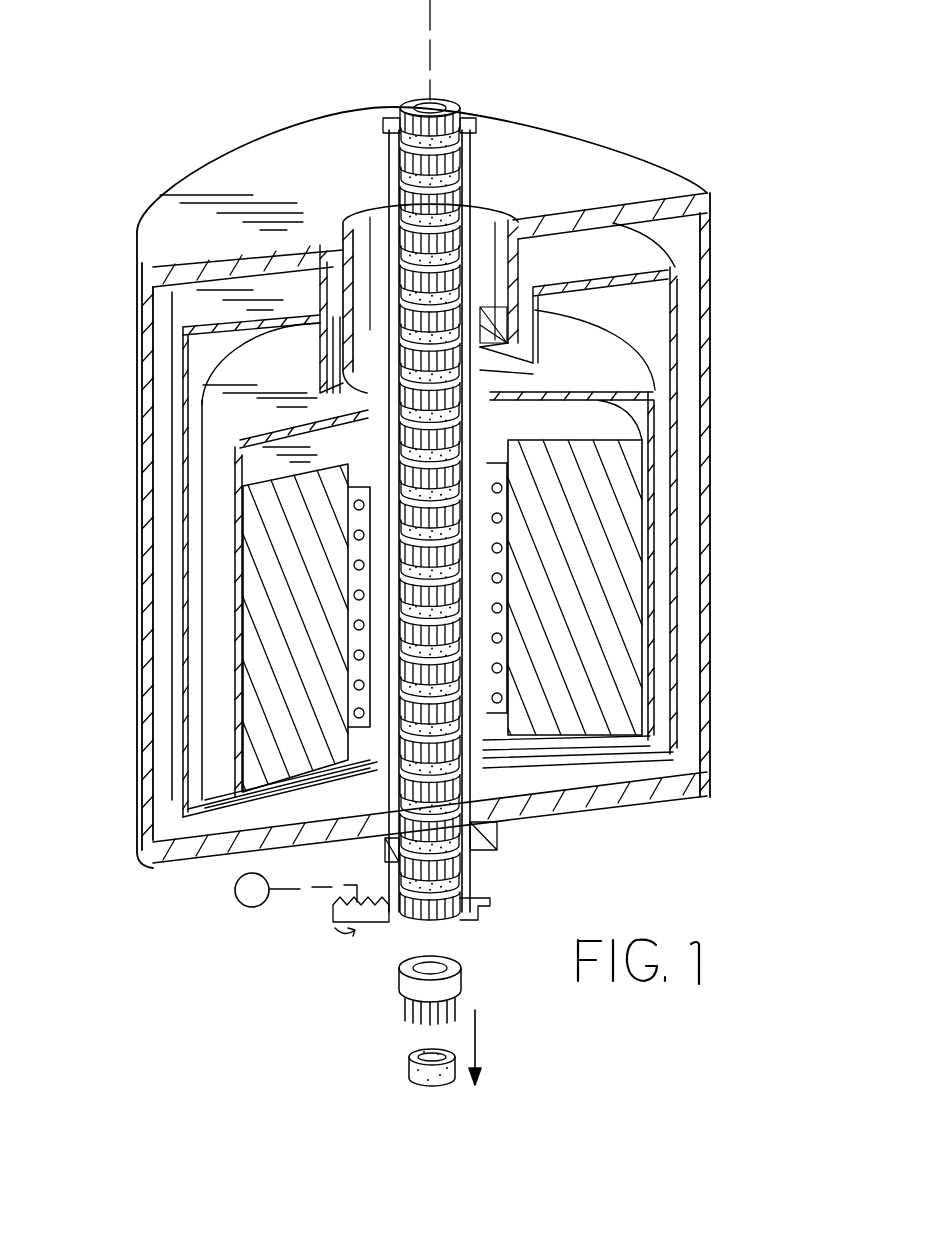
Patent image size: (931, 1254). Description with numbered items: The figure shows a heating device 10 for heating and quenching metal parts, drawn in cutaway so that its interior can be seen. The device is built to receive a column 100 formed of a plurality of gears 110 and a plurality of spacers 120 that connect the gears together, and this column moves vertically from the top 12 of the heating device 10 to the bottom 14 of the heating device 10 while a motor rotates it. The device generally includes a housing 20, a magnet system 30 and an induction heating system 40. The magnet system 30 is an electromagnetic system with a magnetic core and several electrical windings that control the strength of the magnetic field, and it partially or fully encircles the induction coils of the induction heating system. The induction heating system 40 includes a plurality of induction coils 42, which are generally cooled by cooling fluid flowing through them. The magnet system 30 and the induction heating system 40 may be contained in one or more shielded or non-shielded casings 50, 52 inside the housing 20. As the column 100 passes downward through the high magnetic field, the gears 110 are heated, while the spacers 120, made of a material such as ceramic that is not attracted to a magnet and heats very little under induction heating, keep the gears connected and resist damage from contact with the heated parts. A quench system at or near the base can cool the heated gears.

The heating device 10 is at (740, 128).
The top 12 is at (246, 148).
The bottom 14 is at (178, 876).
The housing 20 is at (710, 352).
The magnet system 30 is at (623, 513).
The induction heating system 40 is at (503, 690).
The induction coils 42 is at (507, 633).
The casing 50 is at (678, 293).
The casing 52 is at (655, 401).
The column 100 is at (500, 175).
The gears 110 is at (455, 275).
The spacers 120 is at (423, 145).